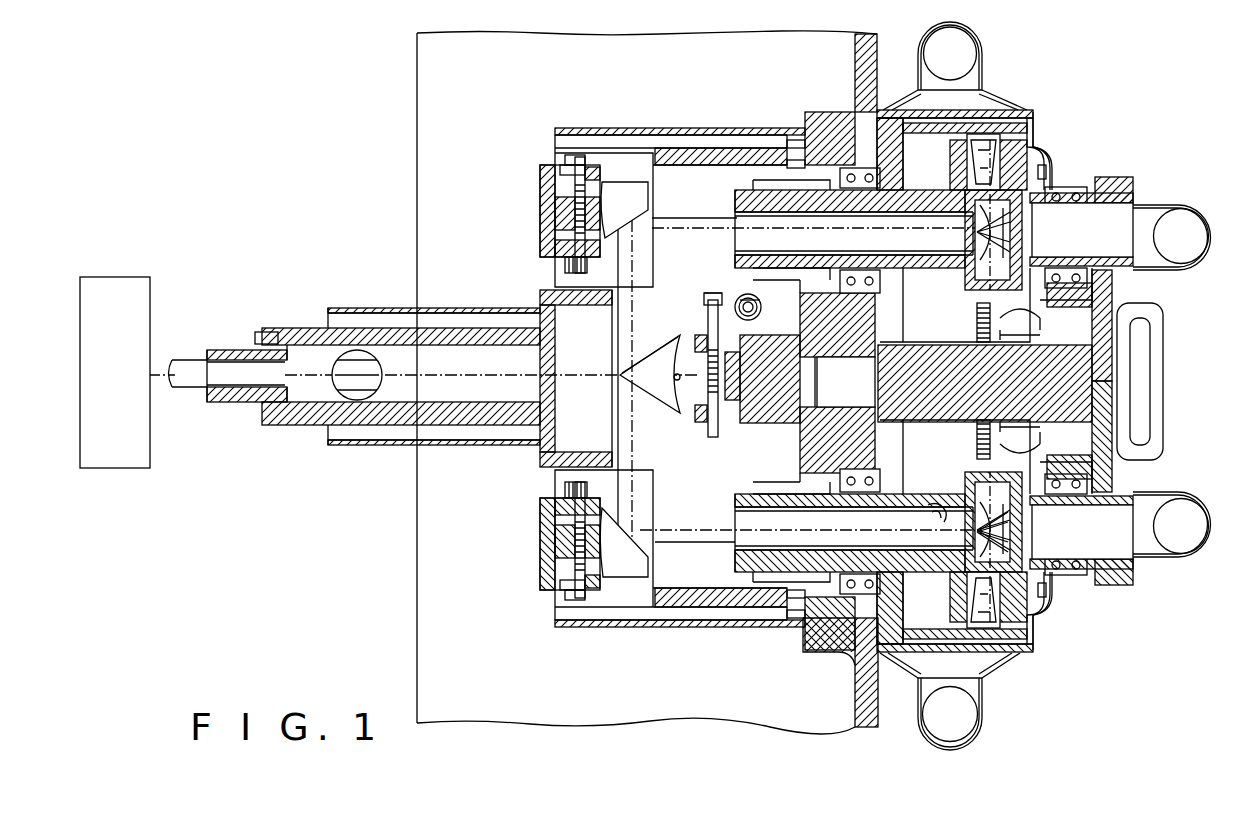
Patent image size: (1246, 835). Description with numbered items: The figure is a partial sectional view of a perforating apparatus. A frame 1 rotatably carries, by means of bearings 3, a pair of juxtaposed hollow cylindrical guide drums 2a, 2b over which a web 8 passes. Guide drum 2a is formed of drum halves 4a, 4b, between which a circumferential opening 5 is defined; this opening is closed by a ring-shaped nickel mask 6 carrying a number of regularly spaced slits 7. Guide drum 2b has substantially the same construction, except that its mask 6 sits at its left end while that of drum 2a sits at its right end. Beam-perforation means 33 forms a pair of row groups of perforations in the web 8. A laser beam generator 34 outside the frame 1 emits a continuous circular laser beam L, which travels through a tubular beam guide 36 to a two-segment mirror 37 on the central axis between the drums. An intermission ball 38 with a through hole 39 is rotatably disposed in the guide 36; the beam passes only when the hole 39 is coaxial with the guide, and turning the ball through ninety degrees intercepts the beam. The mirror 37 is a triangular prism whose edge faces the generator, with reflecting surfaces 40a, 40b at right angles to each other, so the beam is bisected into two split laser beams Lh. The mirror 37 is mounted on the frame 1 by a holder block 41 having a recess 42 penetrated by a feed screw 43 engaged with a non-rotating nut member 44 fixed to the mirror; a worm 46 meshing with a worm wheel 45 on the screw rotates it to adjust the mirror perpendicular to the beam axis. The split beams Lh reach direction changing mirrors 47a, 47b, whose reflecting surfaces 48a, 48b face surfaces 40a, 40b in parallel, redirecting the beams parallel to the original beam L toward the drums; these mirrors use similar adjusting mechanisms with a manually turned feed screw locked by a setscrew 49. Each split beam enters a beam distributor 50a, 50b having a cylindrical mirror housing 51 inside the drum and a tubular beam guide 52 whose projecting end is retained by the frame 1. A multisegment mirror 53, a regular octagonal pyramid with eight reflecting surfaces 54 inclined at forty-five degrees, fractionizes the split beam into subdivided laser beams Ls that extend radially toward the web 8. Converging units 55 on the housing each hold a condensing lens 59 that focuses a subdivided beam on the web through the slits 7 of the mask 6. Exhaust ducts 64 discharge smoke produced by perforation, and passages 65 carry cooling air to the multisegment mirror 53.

The frame 1 is at (866, 727).
The guide drum 2a is at (1052, 160).
The guide drum 2b is at (1047, 633).
The bearings 3 is at (850, 170).
The drum half 4a is at (905, 128).
The drum half 4b is at (1042, 132).
The circumferential opening 5 is at (985, 140).
The ring-shaped mask 6 is at (1038, 318).
The slits 7 is at (1022, 336).
The web 8 is at (975, 95).
The beam-perforation means 33 is at (606, 722).
The laser beam generator 34 is at (150, 470).
The tubular beam guide 36 is at (294, 326).
The two-segment mirror 37 is at (660, 412).
The intermission ball 38 is at (358, 350).
The through hole 39 is at (358, 402).
The reflecting surface 40a is at (640, 347).
The reflecting surface 40b is at (640, 400).
The holder block 41 is at (545, 232).
The recess 42 is at (555, 248).
The feed screw 43 is at (570, 190).
The nut member 44 is at (557, 212).
The worm wheel 45 is at (713, 296).
The worm 46 is at (742, 298).
The direction changing mirror 47a is at (628, 185).
The direction changing mirror 47b is at (620, 600).
The reflecting surface 48a is at (648, 213).
The reflecting surface 48b is at (650, 560).
The setscrew 49 is at (565, 163).
The beam distributor 50a is at (960, 293).
The beam distributor 50b is at (1025, 448).
The cylindrical mirror housing 51 is at (978, 531).
The tubular beam guide 52 is at (925, 267).
The multisegment mirror 53 is at (1040, 233).
The reflecting surfaces 54 is at (1005, 240).
The converging units 55 is at (1010, 130).
The condensing lens 59 is at (1047, 170).
The exhaust ducts 64 is at (935, 48).
The passages 65 is at (938, 510).
The laser beam L is at (305, 392).
The split laser beams Lh is at (637, 244).
The subdivided laser beams Ls is at (1035, 200).